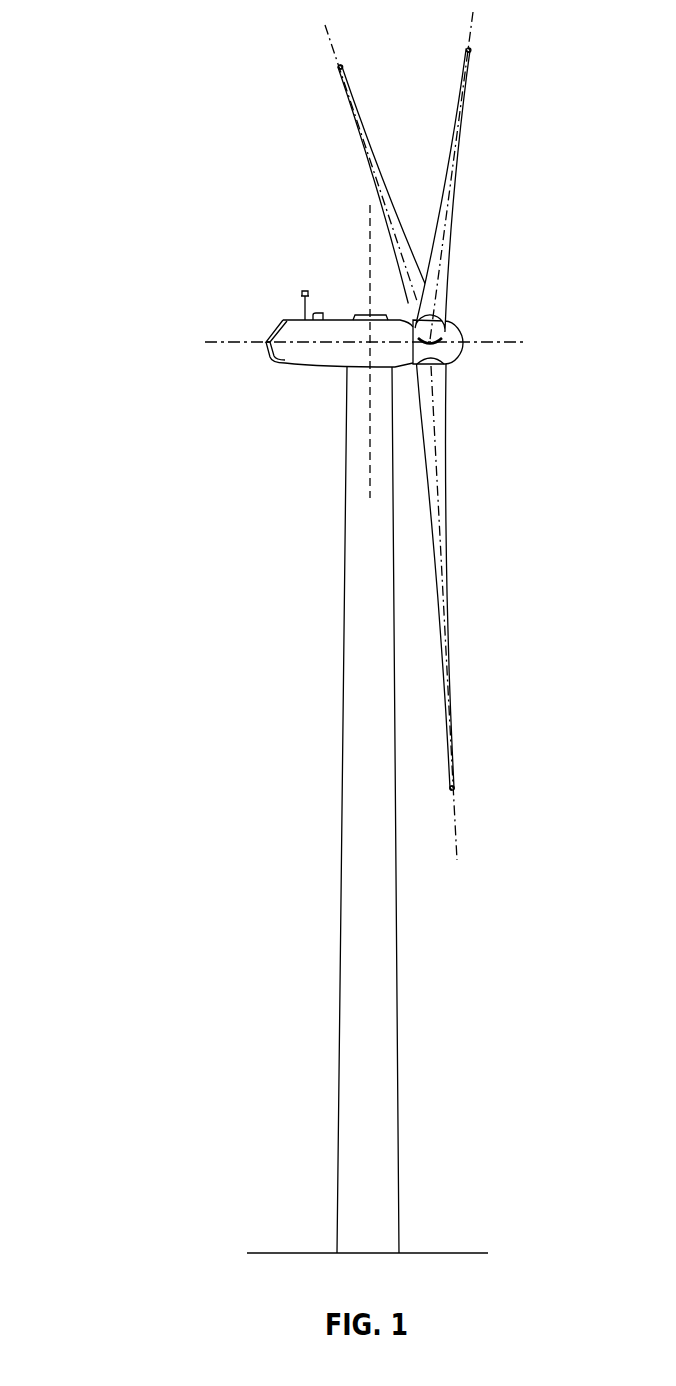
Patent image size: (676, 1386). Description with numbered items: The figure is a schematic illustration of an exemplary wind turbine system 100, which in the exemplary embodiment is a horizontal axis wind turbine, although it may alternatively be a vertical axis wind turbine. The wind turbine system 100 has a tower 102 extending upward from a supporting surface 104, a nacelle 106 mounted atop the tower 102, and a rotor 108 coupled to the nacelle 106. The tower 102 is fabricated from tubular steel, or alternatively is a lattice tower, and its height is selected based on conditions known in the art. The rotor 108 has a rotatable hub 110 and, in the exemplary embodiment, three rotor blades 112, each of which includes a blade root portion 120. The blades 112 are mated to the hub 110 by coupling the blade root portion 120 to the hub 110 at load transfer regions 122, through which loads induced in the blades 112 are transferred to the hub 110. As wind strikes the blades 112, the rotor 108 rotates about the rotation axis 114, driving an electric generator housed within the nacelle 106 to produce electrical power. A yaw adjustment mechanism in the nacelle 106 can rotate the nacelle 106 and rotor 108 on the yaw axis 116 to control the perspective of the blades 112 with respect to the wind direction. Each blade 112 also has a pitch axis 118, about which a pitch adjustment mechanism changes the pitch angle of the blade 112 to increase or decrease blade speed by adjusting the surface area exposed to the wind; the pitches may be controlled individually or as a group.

The wind turbine system 100 is at (127, 38).
The tower 102 is at (337, 1098).
The supporting surface 104 is at (321, 1253).
The nacelle 106 is at (315, 369).
The rotor 108 is at (477, 194).
The rotatable hub 110 is at (456, 345).
The rotor blade 112 is at (368, 163).
The rotation axis 114 is at (503, 343).
The yaw axis 116 is at (368, 232).
The pitch axis 118 is at (338, 44).
The blade root portion 120 is at (438, 403).
The load transfer region 122 is at (437, 355).